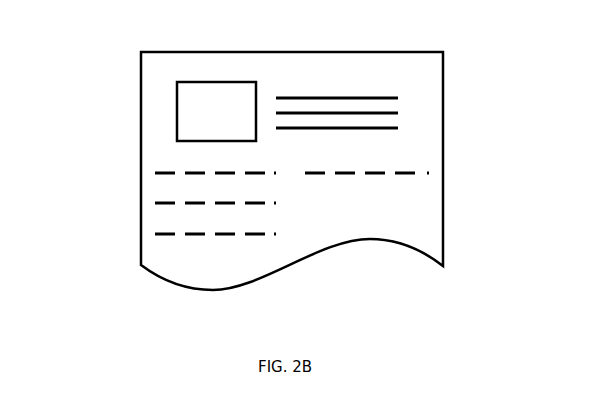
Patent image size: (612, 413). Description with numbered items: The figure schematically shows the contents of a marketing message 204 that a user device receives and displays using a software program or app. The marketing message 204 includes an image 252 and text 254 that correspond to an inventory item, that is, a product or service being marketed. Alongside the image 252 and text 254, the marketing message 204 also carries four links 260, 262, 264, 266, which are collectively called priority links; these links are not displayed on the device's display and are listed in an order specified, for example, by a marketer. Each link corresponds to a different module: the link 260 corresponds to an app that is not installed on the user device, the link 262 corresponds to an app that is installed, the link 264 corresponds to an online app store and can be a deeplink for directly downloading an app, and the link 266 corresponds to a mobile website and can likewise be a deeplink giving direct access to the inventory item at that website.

The marketing message 204 is at (273, 52).
The image 252 is at (217, 82).
The text 254 is at (385, 111).
The link 260 is at (193, 173).
The link 262 is at (172, 203).
The link 264 is at (193, 234).
The link 266 is at (386, 173).